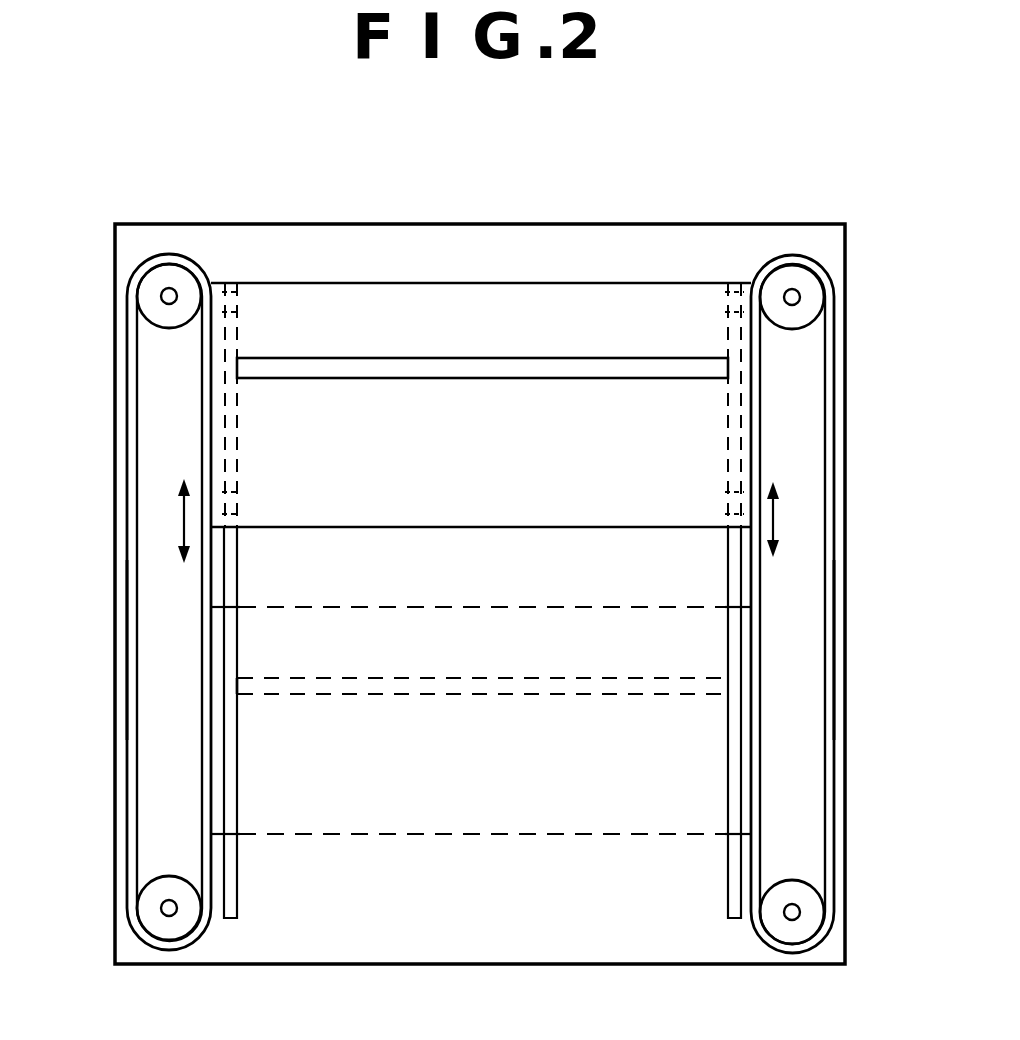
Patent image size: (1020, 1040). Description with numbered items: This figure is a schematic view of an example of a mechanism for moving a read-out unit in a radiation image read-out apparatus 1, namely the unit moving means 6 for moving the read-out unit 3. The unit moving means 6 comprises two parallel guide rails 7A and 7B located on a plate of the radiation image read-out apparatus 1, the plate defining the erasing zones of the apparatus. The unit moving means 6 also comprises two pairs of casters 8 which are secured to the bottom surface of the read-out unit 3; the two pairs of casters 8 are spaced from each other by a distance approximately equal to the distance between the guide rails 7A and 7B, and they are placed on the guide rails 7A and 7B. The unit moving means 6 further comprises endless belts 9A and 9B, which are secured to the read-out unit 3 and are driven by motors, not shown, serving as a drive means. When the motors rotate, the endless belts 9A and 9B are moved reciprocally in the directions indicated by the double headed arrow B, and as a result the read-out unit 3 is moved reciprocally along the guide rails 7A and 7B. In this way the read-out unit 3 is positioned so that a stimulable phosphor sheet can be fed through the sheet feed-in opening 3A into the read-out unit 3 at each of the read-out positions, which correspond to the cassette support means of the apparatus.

The radiation image read-out apparatus 1 is at (569, 218).
The read-out unit 3 is at (445, 282).
The sheet feed-in opening 3A is at (571, 357).
The unit moving means 6 is at (99, 439).
The guide rail 7A is at (229, 919).
The guide rail 7B is at (727, 919).
The caster 8 is at (238, 294).
The endless belt 9A is at (127, 646).
The endless belt 9B is at (834, 664).
The double headed arrow B is at (182, 520).